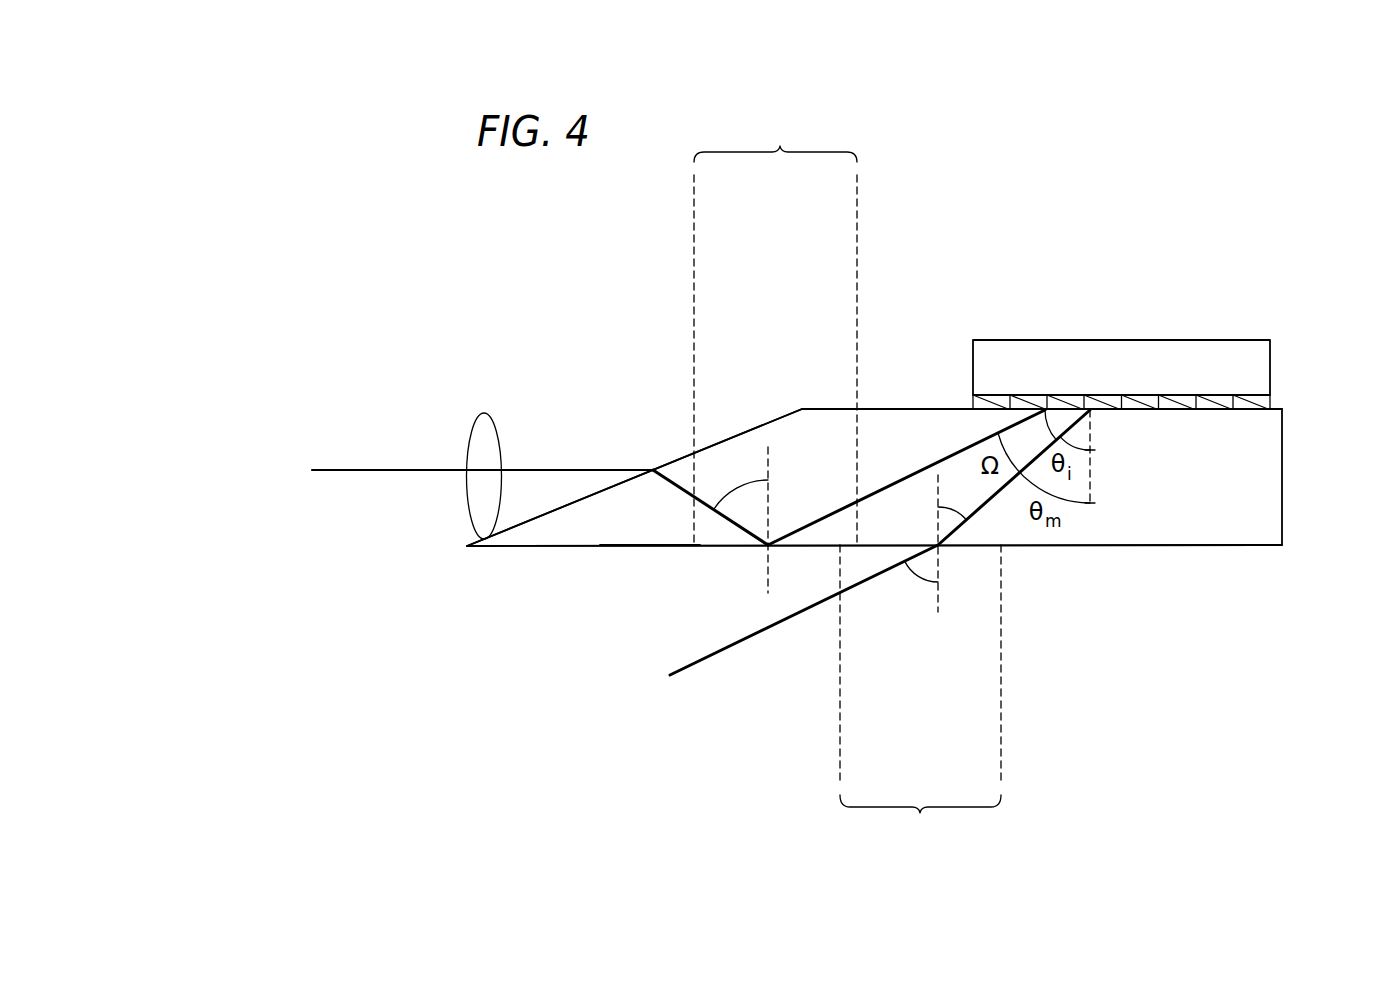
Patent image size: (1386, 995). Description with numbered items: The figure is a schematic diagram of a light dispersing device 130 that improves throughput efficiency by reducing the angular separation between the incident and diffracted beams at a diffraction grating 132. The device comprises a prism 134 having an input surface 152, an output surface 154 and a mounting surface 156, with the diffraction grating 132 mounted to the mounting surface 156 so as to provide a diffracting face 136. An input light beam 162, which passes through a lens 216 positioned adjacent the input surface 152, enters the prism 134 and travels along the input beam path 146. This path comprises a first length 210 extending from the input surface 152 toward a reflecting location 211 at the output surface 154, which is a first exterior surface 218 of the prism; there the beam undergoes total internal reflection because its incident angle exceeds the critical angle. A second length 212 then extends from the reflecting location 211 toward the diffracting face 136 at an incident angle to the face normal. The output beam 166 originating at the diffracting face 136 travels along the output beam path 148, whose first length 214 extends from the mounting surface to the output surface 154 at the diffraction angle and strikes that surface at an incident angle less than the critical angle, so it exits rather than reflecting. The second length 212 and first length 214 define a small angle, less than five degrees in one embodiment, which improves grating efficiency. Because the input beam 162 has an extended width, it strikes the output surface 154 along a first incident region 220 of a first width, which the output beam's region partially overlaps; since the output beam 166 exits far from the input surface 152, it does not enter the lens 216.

The light dispersing device 130 is at (915, 148).
The diffraction grating 132 is at (1146, 268).
The prism 134 is at (1193, 522).
The diffracting face 136 is at (1227, 429).
The input beam path 146 is at (836, 450).
The output beam path 148 is at (1140, 467).
The input surface 152 is at (757, 428).
The output surface 154 is at (1170, 545).
The mounting surface 156 is at (907, 409).
The input light beam 162 is at (358, 470).
The output beam 166 is at (743, 640).
The first length of the input beam path 210 is at (700, 500).
The reflecting location 211 is at (762, 546).
The second length of the input beam path 212 is at (948, 455).
The first length of the output beam path 214 is at (1006, 546).
The lens 216 is at (484, 413).
The first exterior surface 218 is at (657, 545).
The first incident region 220 is at (887, 545).